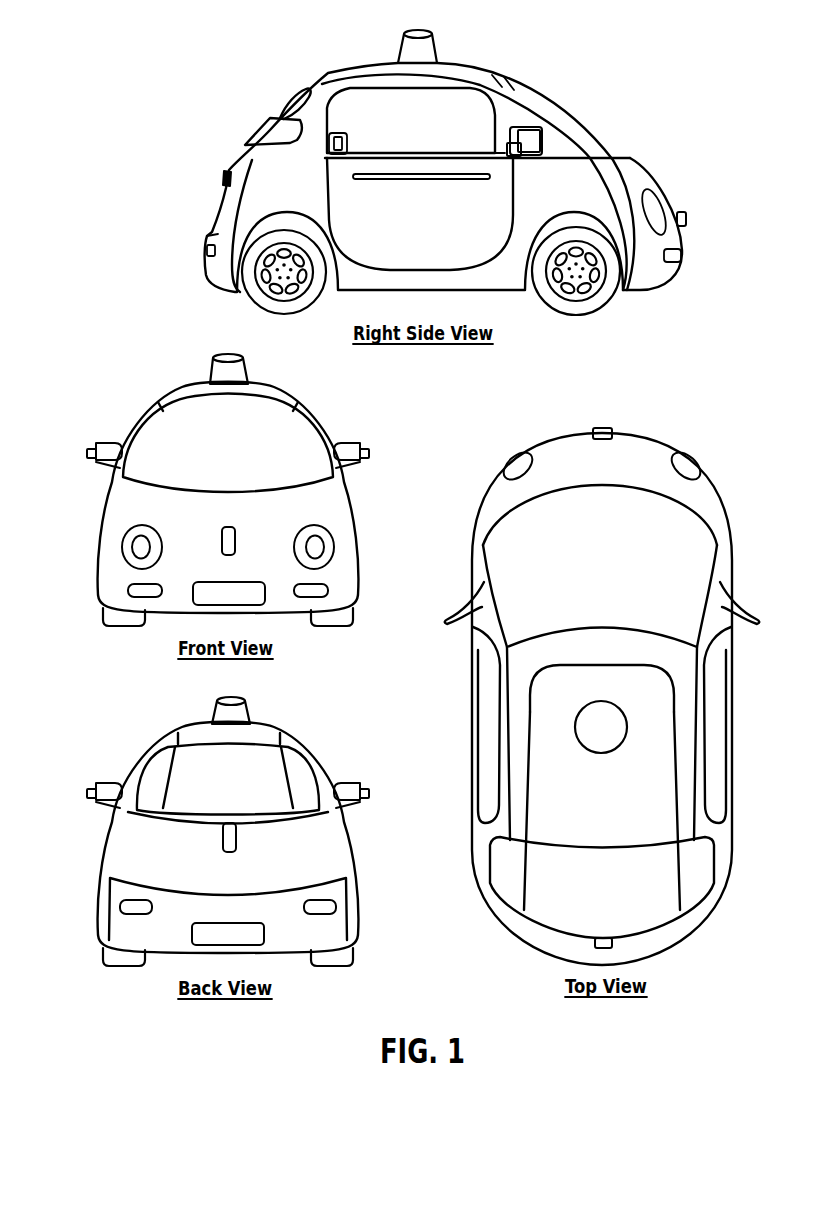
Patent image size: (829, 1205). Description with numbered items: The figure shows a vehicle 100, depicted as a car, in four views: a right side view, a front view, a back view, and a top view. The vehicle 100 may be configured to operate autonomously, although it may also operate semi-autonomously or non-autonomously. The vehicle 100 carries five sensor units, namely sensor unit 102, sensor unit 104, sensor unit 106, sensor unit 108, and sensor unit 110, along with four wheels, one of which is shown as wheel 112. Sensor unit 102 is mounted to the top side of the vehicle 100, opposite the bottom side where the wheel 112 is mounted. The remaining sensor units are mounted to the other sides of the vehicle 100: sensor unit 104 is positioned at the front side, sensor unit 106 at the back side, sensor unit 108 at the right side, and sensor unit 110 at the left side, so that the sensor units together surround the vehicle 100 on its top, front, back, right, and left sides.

The vehicle 100 is at (92, 96).
The sensor unit 102 is at (437, 50).
The sensor unit 104 is at (684, 218).
The sensor unit 106 is at (223, 178).
The sensor unit 108 is at (560, 148).
The sensor unit 110 is at (370, 453).
The wheel 112 is at (577, 312).